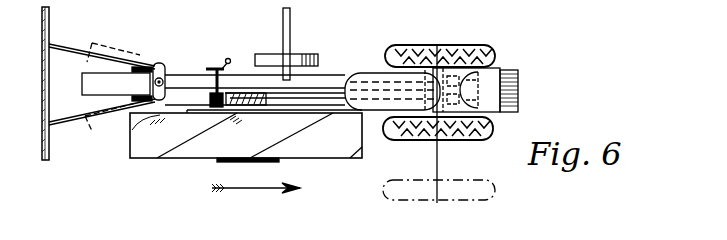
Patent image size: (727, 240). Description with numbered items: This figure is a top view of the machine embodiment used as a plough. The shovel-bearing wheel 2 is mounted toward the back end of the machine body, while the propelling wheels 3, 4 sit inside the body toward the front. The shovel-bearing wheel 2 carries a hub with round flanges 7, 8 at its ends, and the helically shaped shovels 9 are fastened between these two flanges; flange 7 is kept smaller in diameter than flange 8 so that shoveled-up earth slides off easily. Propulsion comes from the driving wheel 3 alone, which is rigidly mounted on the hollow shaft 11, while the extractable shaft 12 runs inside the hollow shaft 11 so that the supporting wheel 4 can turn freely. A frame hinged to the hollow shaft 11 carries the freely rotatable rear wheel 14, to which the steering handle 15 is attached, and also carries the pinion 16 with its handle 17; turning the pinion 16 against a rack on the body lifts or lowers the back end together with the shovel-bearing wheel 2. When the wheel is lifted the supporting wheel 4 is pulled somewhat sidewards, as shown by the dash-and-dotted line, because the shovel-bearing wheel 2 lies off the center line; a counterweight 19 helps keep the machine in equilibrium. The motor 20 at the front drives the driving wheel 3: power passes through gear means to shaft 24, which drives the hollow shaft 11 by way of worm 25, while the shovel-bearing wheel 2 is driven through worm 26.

The shovel-bearing wheel 2 is at (127, 147).
The propelling wheel (driving wheel) 3 is at (490, 50).
The propelling wheel (supporting wheel) 4 is at (466, 135).
The round flange 7 is at (240, 162).
The round flange 8 is at (188, 118).
The shovels 9 is at (215, 118).
The hollow shaft 11 is at (437, 58).
The extractable shaft 12 is at (434, 175).
The rear wheel 14 is at (82, 80).
The steering handle 15 is at (49, 45).
The pinion 16 is at (209, 98).
The handle 17 is at (226, 64).
The counterweight 19 is at (270, 56).
The motor 20 is at (362, 78).
The shaft 24 is at (470, 58).
The worm 25 is at (426, 84).
The worm 26 is at (243, 92).